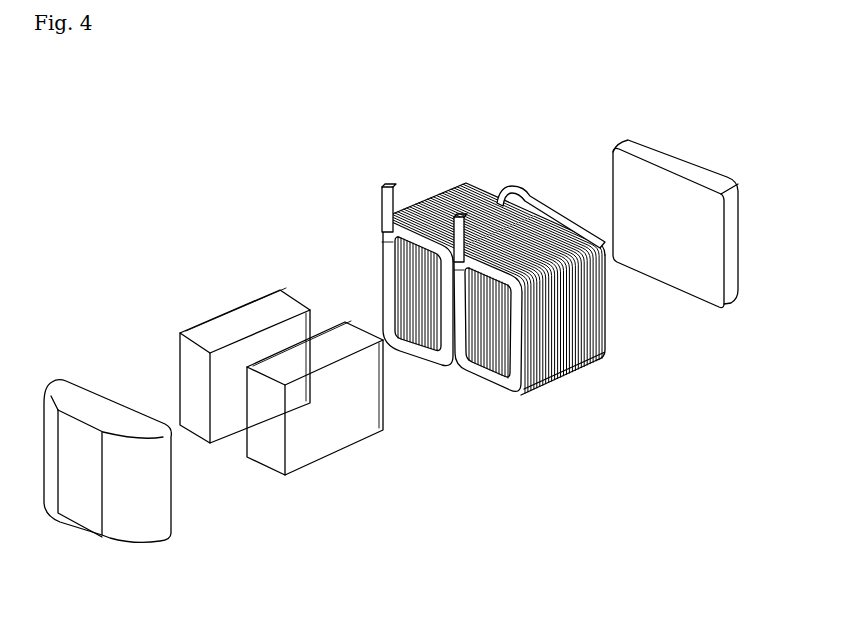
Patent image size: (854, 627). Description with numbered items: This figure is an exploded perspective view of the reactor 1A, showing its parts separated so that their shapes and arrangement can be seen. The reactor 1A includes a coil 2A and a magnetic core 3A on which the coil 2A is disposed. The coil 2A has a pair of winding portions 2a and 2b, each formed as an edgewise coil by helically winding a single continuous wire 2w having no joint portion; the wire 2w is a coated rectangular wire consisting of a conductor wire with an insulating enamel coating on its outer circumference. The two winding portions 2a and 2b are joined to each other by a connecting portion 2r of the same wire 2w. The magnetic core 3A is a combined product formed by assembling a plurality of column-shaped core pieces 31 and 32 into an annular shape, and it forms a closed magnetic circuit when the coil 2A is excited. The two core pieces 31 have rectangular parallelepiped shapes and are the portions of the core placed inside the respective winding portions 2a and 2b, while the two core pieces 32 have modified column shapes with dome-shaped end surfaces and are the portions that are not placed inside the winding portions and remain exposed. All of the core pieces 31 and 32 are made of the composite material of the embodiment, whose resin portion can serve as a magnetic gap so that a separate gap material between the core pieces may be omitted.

The reactor 1A is at (288, 228).
The coil 2A is at (430, 197).
The winding portion 2a is at (598, 360).
The winding portion 2b is at (468, 194).
The connecting portion 2r is at (520, 185).
The wire 2w is at (380, 200).
The magnetic core 3A is at (391, 320).
The core piece 31 is at (252, 310).
The core piece 32 is at (107, 398).